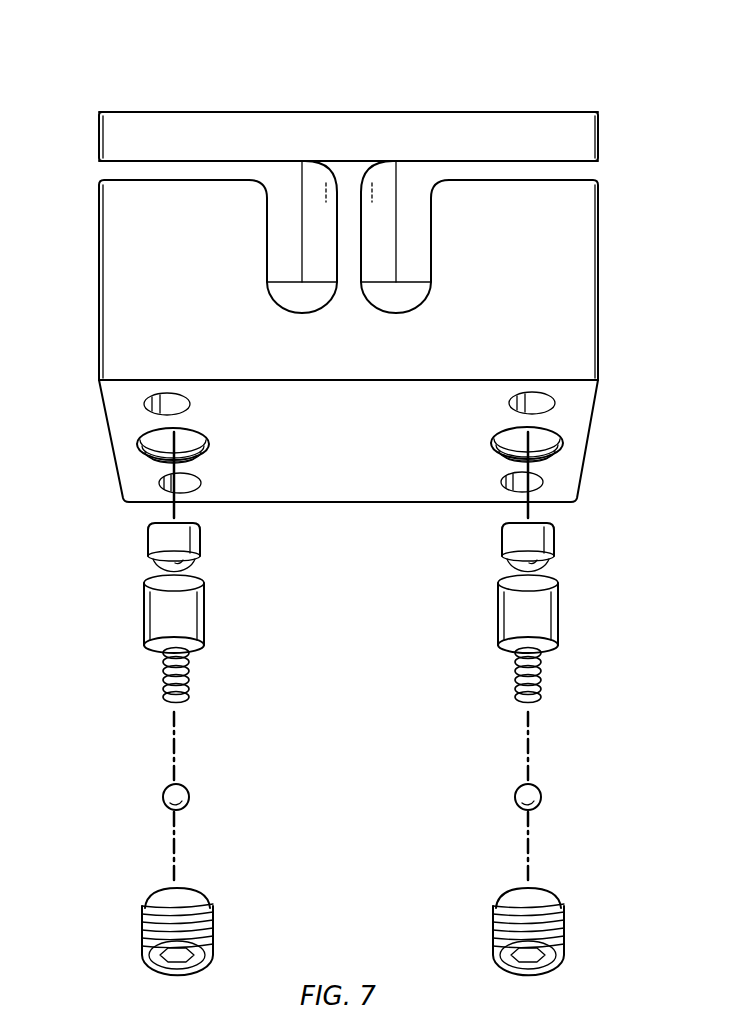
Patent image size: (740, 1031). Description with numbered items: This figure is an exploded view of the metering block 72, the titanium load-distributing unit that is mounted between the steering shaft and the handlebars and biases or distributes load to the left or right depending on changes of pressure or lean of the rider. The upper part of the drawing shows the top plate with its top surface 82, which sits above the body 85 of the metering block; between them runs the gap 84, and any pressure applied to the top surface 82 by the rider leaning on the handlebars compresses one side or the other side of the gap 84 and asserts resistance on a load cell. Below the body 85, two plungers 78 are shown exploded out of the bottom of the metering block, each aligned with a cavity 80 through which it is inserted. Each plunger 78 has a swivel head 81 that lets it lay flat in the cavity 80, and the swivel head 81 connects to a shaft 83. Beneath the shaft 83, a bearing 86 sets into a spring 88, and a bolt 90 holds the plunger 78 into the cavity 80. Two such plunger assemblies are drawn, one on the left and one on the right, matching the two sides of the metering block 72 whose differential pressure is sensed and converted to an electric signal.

The metering block 72 is at (262, 125).
The top surface 82 is at (485, 110).
The gap 84 is at (112, 170).
The body 85 is at (583, 262).
The cavity 80 is at (140, 450).
The swivel head 81 is at (148, 545).
The shaft 83 is at (205, 625).
The plunger 78 is at (122, 617).
The spring 88 is at (162, 678).
The bearing 86 is at (163, 797).
The bolt 90 is at (142, 940).